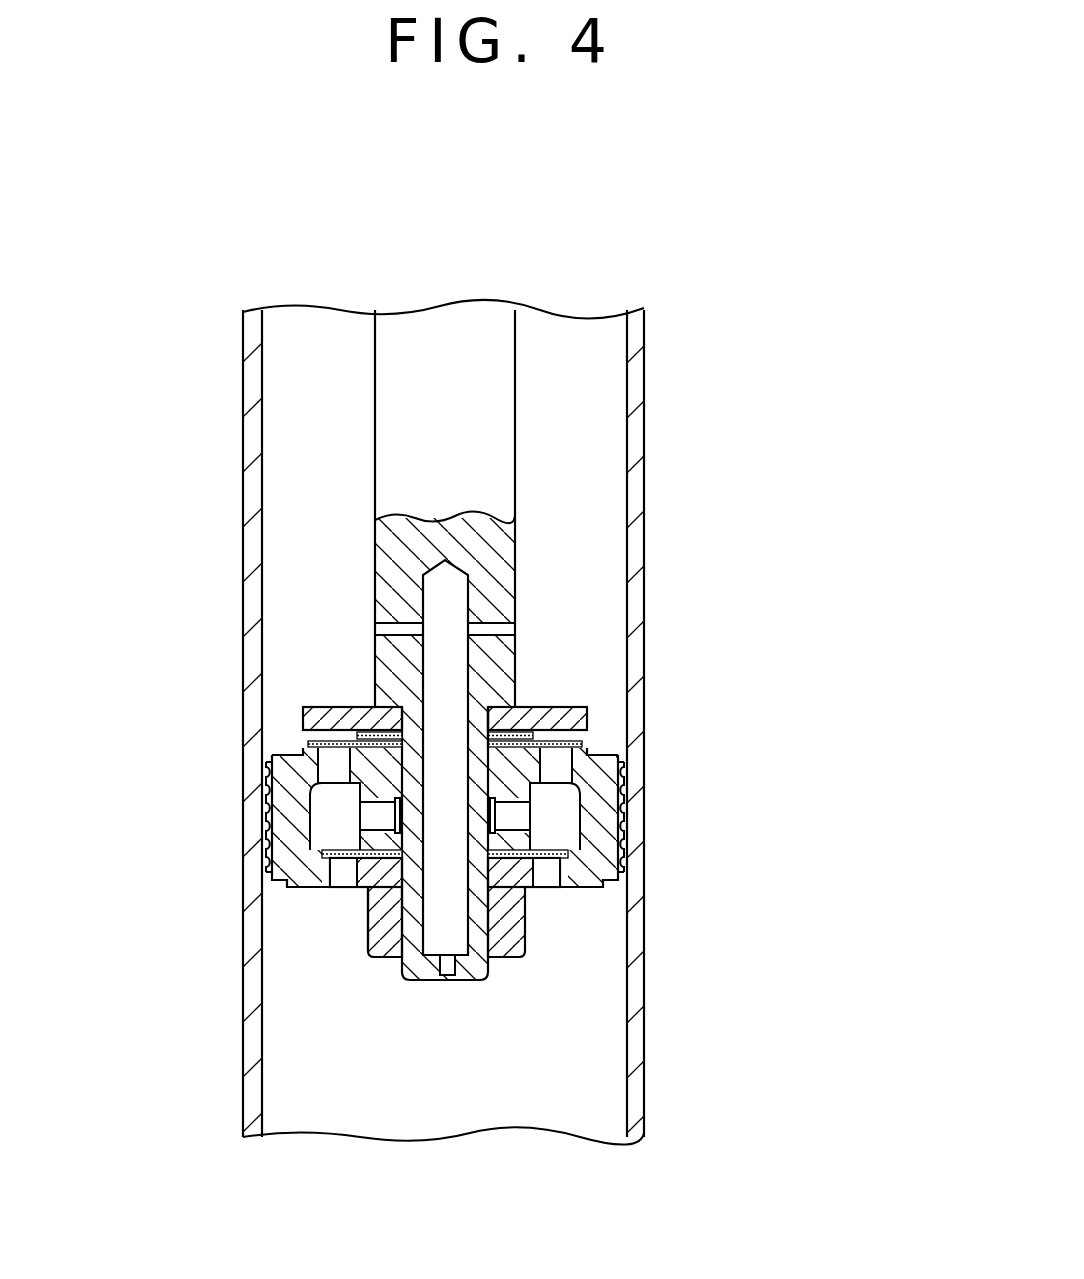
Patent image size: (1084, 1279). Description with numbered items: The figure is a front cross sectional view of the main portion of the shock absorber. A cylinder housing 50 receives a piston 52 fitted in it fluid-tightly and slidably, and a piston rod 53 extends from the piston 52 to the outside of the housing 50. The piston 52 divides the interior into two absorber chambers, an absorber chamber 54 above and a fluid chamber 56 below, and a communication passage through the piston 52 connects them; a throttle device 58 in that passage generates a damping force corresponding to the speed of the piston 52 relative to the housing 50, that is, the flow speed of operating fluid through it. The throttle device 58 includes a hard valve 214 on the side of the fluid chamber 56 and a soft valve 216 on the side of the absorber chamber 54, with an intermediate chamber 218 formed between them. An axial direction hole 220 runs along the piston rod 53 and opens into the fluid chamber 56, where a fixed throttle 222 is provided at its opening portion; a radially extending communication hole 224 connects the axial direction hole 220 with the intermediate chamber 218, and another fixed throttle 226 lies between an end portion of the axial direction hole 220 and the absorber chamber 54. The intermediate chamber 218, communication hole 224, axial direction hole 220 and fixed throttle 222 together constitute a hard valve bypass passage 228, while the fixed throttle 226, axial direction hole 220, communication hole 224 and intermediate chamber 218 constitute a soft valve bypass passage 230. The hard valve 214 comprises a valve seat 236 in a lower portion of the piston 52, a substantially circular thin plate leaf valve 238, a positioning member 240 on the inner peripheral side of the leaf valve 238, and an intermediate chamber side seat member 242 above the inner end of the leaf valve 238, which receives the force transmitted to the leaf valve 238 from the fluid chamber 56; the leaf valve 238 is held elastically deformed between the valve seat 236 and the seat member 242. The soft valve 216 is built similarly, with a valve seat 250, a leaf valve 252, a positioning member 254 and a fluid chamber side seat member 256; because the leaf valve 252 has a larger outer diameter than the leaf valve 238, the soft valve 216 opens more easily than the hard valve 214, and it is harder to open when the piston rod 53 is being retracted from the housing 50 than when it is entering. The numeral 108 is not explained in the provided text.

The cylinder housing 50 is at (632, 460).
The piston 52 is at (514, 817).
The piston rod 53 is at (491, 379).
The absorber chamber 54 is at (292, 457).
The fluid chamber 56 is at (313, 1110).
The throttle device 58 is at (657, 688).
The damping force generating portion 108 is at (643, 660).
The hard valve 214 is at (597, 842).
The soft valve 216 is at (545, 730).
The intermediate chamber 218 is at (593, 808).
The axial direction hole 220 is at (414, 973).
The fixed throttle 222 is at (447, 982).
The communication hole 224 is at (400, 808).
The fixed throttle 226 is at (497, 626).
The hard valve bypass passage 228 is at (473, 923).
The soft valve bypass passage 230 is at (413, 688).
The valve seat 236 is at (529, 904).
The leaf valve 238 is at (553, 890).
The positioning member 240 is at (345, 875).
The intermediate chamber side seat member 242 is at (368, 913).
The valve seat 250 is at (585, 745).
The leaf valve 252 is at (587, 712).
The positioning member 254 is at (527, 707).
The fluid chamber side seat member 256 is at (310, 740).